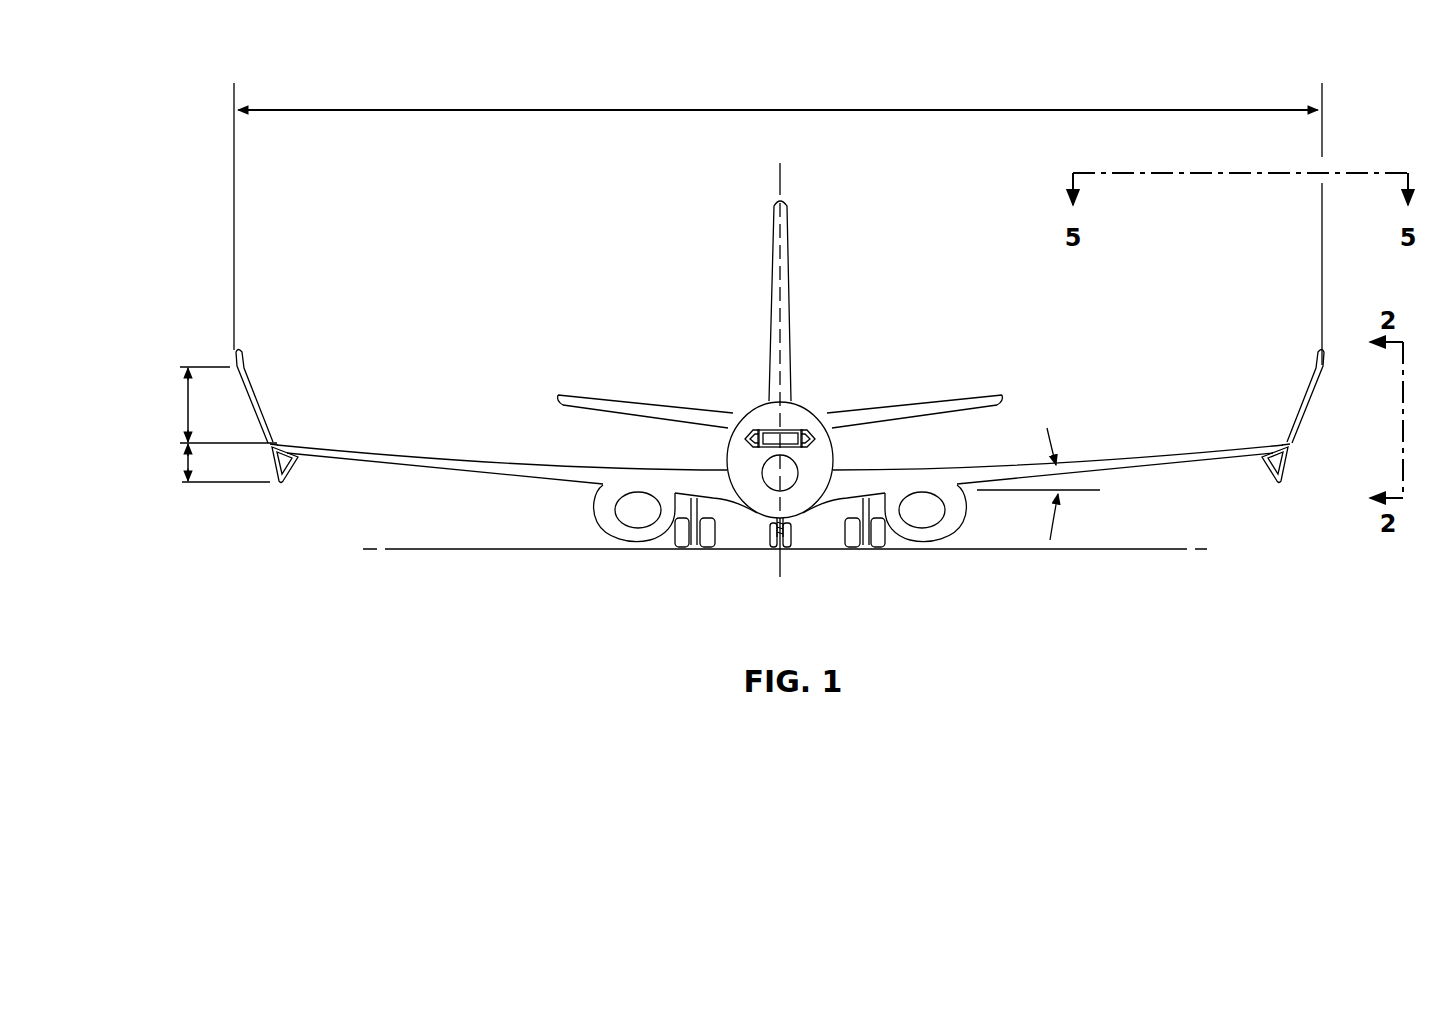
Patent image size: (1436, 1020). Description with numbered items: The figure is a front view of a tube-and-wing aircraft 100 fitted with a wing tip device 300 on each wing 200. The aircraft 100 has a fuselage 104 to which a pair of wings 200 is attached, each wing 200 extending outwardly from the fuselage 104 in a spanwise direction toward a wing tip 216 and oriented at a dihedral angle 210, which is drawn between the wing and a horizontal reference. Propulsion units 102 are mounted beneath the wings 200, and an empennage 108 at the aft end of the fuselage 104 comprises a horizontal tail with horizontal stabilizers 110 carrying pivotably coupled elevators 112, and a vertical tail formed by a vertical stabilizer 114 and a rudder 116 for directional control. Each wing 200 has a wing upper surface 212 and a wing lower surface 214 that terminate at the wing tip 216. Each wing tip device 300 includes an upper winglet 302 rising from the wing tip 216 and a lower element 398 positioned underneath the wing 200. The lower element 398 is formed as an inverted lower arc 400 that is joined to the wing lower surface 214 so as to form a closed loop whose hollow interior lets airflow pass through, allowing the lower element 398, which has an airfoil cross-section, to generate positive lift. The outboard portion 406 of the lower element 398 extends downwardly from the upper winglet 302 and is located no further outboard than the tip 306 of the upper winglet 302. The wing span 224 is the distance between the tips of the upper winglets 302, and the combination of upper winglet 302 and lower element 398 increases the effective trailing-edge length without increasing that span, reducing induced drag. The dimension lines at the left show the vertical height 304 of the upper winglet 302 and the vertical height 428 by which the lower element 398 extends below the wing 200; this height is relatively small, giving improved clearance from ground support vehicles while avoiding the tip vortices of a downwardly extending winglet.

The aircraft 100 is at (703, 380).
The propulsion units 102 is at (638, 543).
The fuselage 104 is at (727, 455).
The empennage 108 is at (839, 282).
The horizontal stabilizer 110 is at (780, 395).
The elevator 112 is at (692, 405).
The vertical stabilizer 114 is at (839, 301).
The rudder 116 is at (790, 267).
The wing 200 is at (780, 464).
The dihedral angle 210 is at (1048, 443).
The wing upper surface 212 is at (1160, 453).
The wing lower surface 214 is at (1155, 468).
The wing tip 216 is at (278, 443).
The wing span 224 is at (760, 108).
The wing tip device 300 is at (759, 428).
The upper winglet 302 is at (767, 387).
The vertical height 304 is at (188, 400).
The tip 306 is at (235, 350).
The lower element 398 is at (270, 460).
The lower arc 400 is at (292, 478).
The outboard portion 406 is at (282, 484).
The vertical height 428 is at (188, 460).